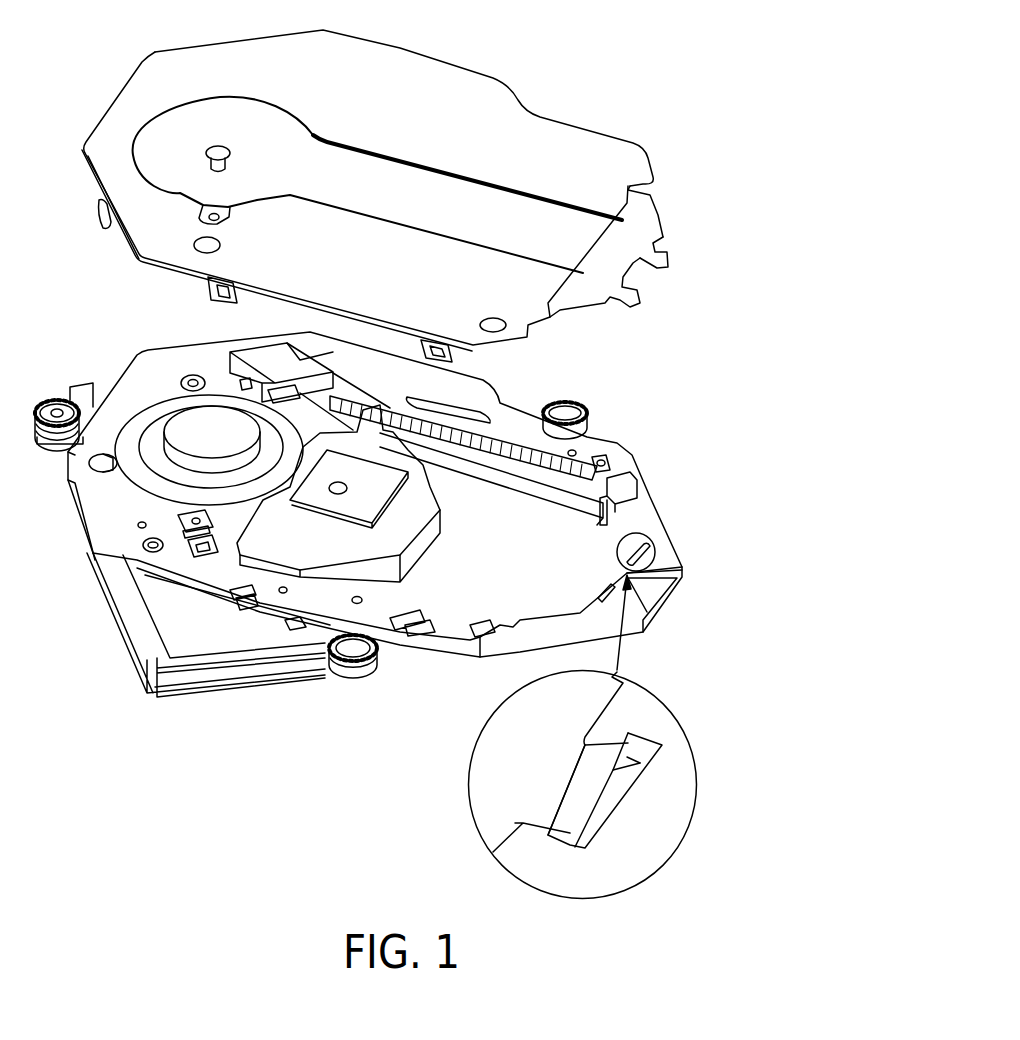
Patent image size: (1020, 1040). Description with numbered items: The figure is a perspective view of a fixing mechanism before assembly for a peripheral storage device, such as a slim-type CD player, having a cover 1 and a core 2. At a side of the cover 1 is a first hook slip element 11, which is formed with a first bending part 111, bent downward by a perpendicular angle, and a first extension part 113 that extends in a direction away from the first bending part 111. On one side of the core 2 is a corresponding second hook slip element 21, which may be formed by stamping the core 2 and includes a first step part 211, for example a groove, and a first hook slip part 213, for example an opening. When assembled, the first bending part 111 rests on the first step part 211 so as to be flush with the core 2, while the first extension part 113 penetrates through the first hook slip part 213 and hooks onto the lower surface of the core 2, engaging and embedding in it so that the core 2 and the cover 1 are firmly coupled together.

The cover 1 is at (452, 196).
The first hook slip element 11 is at (686, 251).
The first bending part 111 is at (662, 244).
The first extension part 113 is at (661, 282).
The core 2 is at (410, 615).
The second hook slip element 21 is at (512, 716).
The first step part 211 is at (563, 795).
The first hook slip part 213 is at (577, 832).